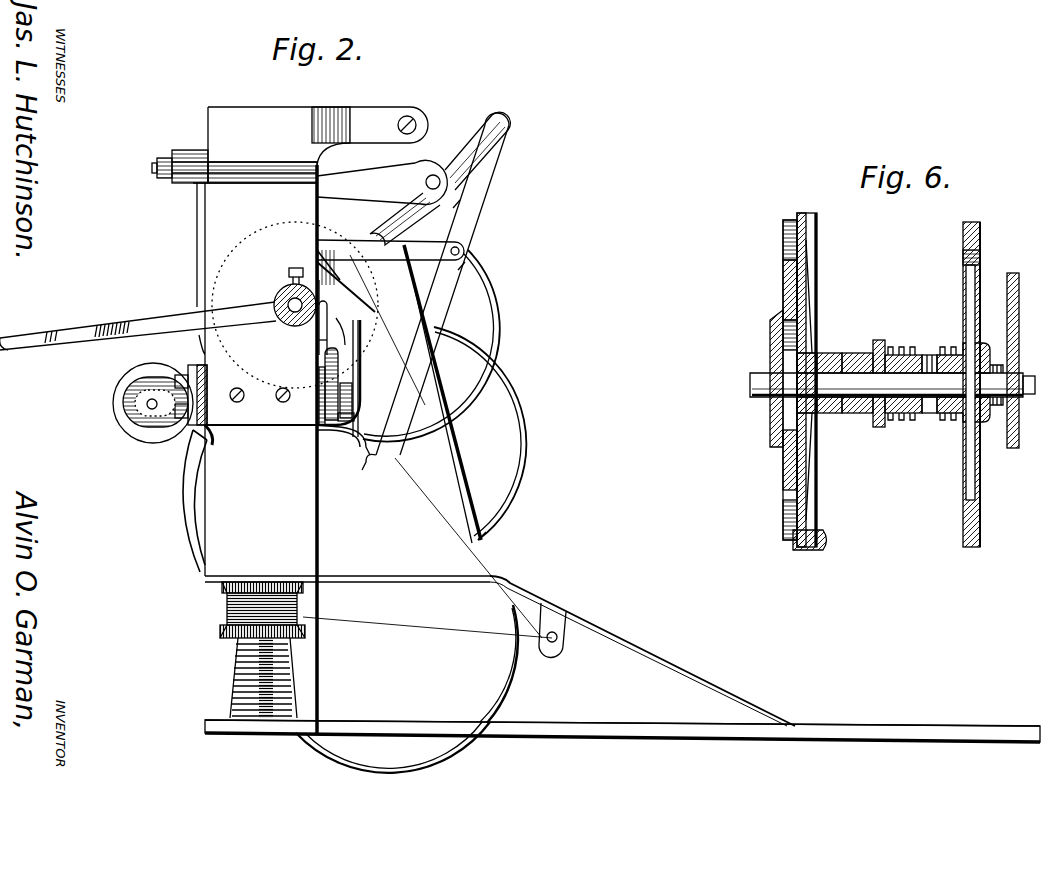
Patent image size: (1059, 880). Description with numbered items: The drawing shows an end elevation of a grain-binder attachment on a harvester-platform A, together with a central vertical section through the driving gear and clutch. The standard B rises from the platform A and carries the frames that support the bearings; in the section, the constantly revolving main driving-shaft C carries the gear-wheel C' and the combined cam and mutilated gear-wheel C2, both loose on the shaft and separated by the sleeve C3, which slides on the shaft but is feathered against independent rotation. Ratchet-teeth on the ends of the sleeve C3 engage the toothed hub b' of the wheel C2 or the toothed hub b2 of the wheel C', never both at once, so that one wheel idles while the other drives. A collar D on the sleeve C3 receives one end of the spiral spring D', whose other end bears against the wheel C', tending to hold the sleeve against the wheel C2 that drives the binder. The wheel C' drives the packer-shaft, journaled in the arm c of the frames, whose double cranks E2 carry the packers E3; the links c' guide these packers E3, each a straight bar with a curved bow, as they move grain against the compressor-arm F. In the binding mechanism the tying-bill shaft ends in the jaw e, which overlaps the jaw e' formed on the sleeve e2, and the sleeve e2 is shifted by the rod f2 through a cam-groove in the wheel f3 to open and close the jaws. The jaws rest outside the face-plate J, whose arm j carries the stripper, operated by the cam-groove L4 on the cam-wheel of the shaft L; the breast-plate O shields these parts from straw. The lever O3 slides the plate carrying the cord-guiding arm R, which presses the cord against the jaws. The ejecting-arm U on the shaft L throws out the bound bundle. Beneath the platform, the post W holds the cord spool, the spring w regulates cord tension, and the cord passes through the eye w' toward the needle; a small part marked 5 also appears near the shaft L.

In FIG. 2, the standard B is at (331, 421).
In FIG. 2, the lever O3 is at (205, 238).
In FIG. 2, the ejecting-arm U is at (154, 322).
In FIG. 2, the cam wheel f3 is at (128, 380).
In FIG. 2, the rod f2 is at (128, 403).
In FIG. 2, the compressor-arm F is at (180, 490).
In FIG. 2, the arm c is at (382, 182).
In FIG. 2, the double cranks E2 is at (440, 178).
In FIG. 2, the links c' is at (390, 274).
In FIG. 2, the packers E3 is at (430, 380).
In FIG. 2, the breast-plate O is at (364, 352).
In FIG. 2, the cam-groove L4 is at (312, 268).
In FIG. 2, the shaft L is at (318, 346).
In FIG. 2, the pin 5 is at (313, 336).
In FIG. 2, the face-plate J is at (317, 372).
In FIG. 2, the cord-guiding arm R is at (330, 362).
In FIG. 2, the jaw e' is at (363, 378).
In FIG. 2, the jaw e is at (356, 402).
In FIG. 2, the sleeve e2 is at (343, 440).
In FIG. 2, the arm j is at (343, 321).
In FIG. 2, the harvester-platform A is at (622, 652).
In FIG. 2, the eye w' is at (448, 630).
In FIG. 2, the post W is at (283, 667).
In FIG. 2, the spring w is at (256, 678).
In FIG. 6, the main driving-shaft C is at (892, 385).
In FIG. 6, the collar D is at (859, 369).
In FIG. 6, the spiral spring D' is at (922, 370).
In FIG. 6, the sleeve C3 is at (956, 393).
In FIG. 6, the toothed hub b' is at (829, 430).
In FIG. 6, the toothed hub b2 is at (950, 425).
In FIG. 6, the combined cam and mutilated gear-wheel C2 is at (817, 224).
In FIG. 6, the gear-wheel C' is at (981, 384).